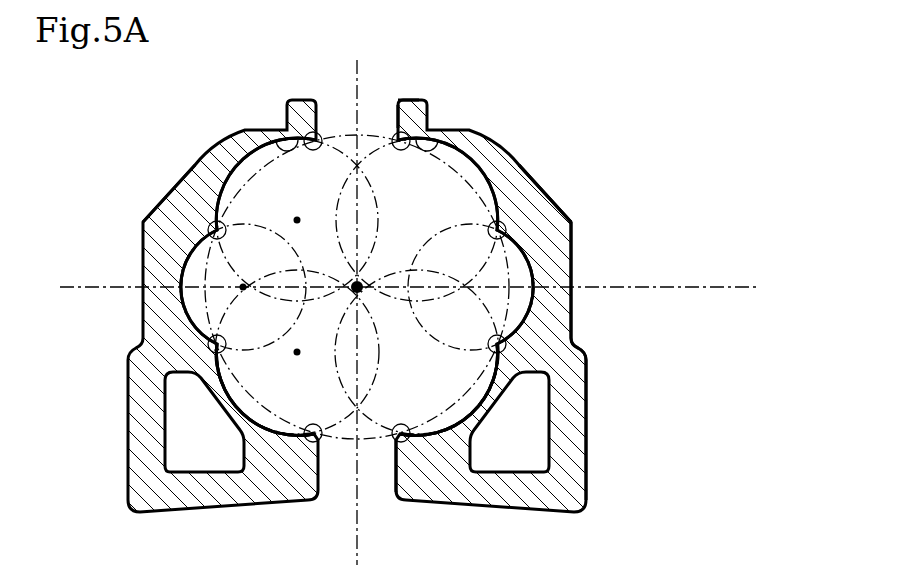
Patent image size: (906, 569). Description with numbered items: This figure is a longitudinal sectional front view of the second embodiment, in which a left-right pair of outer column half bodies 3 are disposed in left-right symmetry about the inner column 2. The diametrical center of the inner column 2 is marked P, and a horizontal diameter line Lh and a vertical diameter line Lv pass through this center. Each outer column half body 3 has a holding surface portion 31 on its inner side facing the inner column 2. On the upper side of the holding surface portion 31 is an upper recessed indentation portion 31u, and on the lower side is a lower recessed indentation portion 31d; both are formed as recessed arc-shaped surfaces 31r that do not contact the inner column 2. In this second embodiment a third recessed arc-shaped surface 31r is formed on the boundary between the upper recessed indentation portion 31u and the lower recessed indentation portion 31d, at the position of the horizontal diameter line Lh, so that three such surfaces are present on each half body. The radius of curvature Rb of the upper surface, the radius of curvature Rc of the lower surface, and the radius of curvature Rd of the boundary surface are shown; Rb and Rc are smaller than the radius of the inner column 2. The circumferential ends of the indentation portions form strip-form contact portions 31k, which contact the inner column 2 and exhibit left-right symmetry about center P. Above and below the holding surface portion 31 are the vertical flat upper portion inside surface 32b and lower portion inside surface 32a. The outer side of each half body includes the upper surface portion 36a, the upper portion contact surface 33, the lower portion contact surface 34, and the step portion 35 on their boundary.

The inner column 2 is at (370, 128).
The outer column half body 3 is at (188, 162).
The holding surface portion 31 is at (358, 566).
The upper recessed indentation portion 31u is at (220, 193).
The recessed arc-shaped surface 31r is at (286, 140).
The strip-form contact portion 31k is at (313, 146).
The lower recessed indentation portion 31d is at (264, 428).
The lower portion inside surface 32a is at (393, 463).
The upper portion inside surface 32b is at (391, 112).
The upper portion contact surface 33 is at (570, 272).
The lower portion contact surface 34 is at (586, 456).
The step portion 35 is at (576, 344).
The upper surface portion 36a is at (572, 203).
The diametrical center P is at (362, 284).
The radius of curvature of upper recessed arc-shaped surface Rb is at (297, 220).
The radius of curvature of lower recessed arc-shaped surface Rc is at (297, 352).
The radius of curvature of boundary recessed arc-shaped surface Rd is at (222, 240).
The horizontal diameter line Lh is at (727, 282).
The vertical diameter line Lv is at (356, 68).